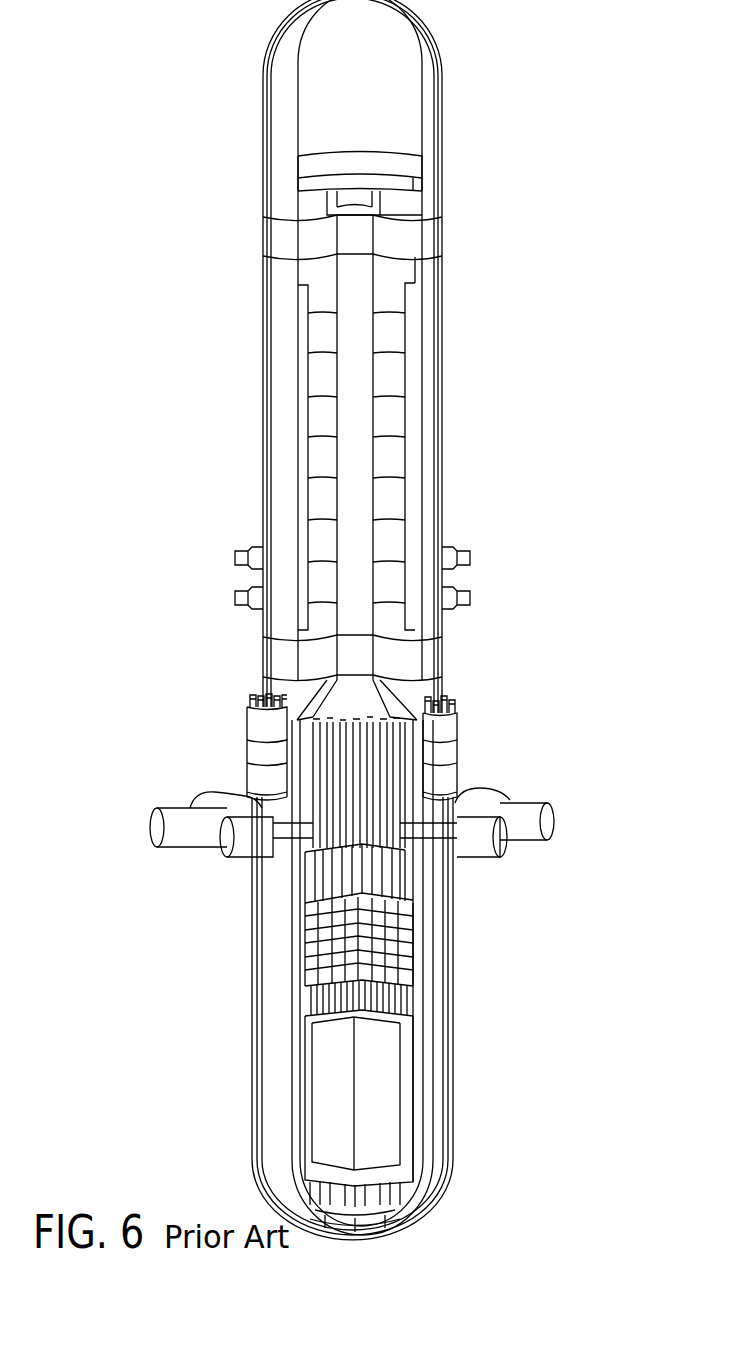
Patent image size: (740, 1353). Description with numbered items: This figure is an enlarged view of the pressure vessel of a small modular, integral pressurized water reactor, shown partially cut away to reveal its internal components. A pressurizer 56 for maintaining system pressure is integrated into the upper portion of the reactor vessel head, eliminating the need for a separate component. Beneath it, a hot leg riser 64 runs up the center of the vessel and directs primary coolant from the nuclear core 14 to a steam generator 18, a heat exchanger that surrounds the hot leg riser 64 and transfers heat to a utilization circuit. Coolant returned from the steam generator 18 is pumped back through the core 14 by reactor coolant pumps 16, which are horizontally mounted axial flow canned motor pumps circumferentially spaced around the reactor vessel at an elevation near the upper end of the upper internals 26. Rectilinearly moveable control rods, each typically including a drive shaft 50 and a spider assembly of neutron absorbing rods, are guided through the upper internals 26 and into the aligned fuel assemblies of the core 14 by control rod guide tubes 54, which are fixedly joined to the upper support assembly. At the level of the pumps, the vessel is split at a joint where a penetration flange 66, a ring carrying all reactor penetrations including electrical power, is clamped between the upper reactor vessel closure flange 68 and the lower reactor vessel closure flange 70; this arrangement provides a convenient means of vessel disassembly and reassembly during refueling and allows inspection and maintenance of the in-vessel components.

The nuclear core 14 is at (393, 1087).
The reactor coolant pump 16 is at (540, 816).
The steam generator 18 is at (383, 437).
The upper internals 26 is at (330, 940).
The drive shaft 50 is at (377, 995).
The control rod guide tube 54 is at (383, 880).
The pressurizer 56 is at (440, 225).
The hot leg riser 64 is at (360, 505).
The penetration flange 66 is at (450, 750).
The upper reactor vessel closure flange 68 is at (450, 728).
The lower reactor vessel closure flange 70 is at (450, 778).